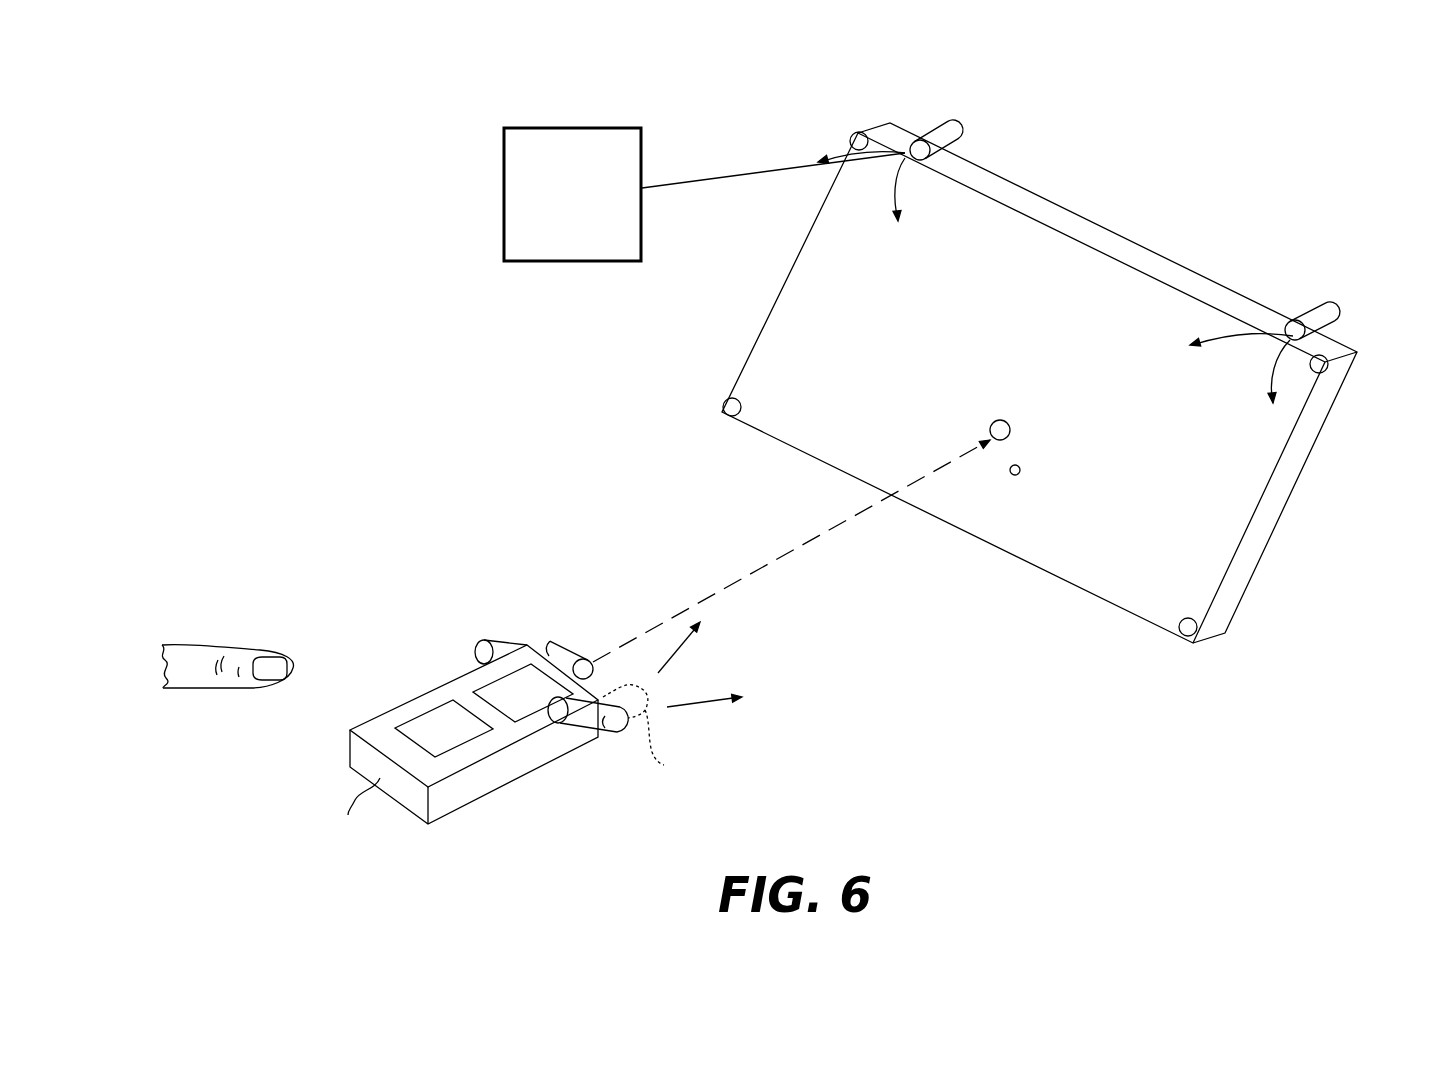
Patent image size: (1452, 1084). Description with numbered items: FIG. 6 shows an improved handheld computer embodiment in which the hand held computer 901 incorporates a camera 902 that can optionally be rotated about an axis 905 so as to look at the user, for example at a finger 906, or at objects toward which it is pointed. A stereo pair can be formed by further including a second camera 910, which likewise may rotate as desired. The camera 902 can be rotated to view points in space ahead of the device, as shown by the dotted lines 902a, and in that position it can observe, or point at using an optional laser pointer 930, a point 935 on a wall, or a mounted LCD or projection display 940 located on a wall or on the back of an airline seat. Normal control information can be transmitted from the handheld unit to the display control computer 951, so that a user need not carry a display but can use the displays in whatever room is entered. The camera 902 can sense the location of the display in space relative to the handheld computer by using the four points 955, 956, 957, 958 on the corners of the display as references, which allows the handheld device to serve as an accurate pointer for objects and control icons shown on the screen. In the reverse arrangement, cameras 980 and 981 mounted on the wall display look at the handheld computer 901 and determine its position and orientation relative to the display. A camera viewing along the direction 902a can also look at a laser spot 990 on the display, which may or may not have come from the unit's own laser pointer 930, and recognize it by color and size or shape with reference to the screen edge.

The hand held computer 901 is at (446, 822).
The camera 902 is at (561, 760).
The dotted lines (forward viewing direction) 902a is at (672, 700).
The axis 905 is at (607, 720).
The finger 906 is at (217, 647).
The camera 910 is at (485, 641).
The laser pointer 930 is at (577, 660).
The point 935 is at (1000, 420).
The display 940 is at (1028, 213).
The display control computer 951 is at (704, 194).
The point (display corner reference) 955 is at (850, 137).
The point (display corner reference) 956 is at (723, 408).
The point (display corner reference) 957 is at (1188, 637).
The point (display corner reference) 958 is at (1328, 372).
The camera 980 is at (960, 125).
The camera 981 is at (1333, 318).
The laser spot 990 is at (1020, 467).